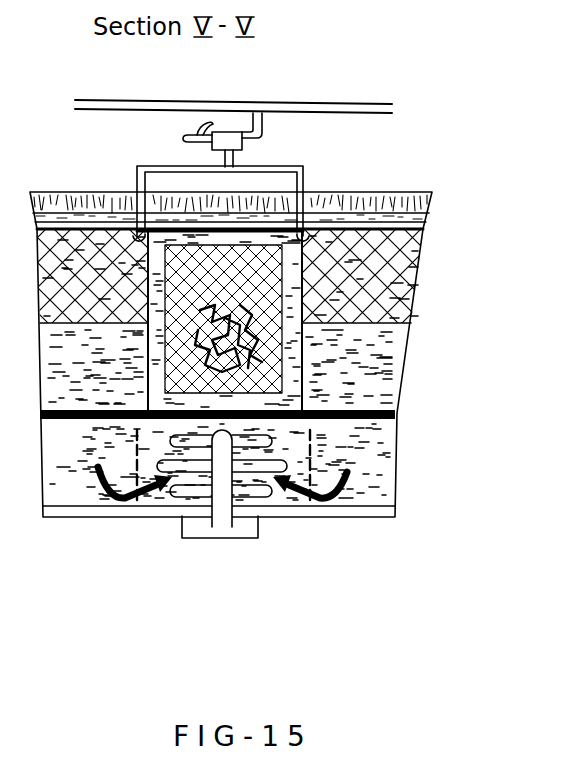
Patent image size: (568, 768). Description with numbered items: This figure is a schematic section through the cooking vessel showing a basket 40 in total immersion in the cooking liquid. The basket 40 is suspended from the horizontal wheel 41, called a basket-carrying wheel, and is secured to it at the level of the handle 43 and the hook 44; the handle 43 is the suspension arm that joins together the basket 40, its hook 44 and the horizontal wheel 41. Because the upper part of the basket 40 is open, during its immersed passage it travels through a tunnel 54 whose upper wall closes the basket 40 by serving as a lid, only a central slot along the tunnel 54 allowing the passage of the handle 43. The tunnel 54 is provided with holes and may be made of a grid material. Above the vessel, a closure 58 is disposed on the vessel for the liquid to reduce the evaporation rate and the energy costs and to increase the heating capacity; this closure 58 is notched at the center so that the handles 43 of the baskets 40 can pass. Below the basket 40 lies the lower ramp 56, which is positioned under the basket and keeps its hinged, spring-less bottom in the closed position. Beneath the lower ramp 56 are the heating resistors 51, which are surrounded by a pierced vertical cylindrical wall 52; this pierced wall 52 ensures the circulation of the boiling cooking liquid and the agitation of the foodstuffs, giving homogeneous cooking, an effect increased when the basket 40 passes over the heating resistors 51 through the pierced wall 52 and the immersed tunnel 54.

The horizontal wheel 41 is at (358, 113).
The hook 44 is at (261, 113).
The handle 43 is at (302, 177).
The closure 58 is at (387, 193).
The tunnel 54 is at (390, 222).
The basket 40 is at (263, 362).
The lower ramp 56 is at (395, 414).
The pierced vertical cylindrical wall 52 is at (393, 462).
The heating resistors 51 is at (262, 490).